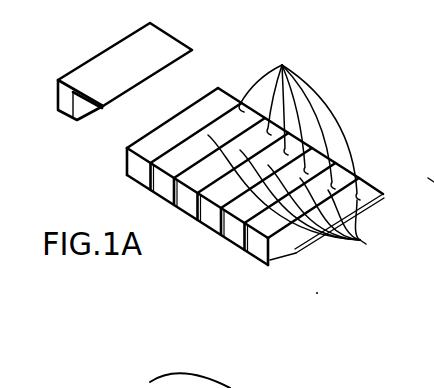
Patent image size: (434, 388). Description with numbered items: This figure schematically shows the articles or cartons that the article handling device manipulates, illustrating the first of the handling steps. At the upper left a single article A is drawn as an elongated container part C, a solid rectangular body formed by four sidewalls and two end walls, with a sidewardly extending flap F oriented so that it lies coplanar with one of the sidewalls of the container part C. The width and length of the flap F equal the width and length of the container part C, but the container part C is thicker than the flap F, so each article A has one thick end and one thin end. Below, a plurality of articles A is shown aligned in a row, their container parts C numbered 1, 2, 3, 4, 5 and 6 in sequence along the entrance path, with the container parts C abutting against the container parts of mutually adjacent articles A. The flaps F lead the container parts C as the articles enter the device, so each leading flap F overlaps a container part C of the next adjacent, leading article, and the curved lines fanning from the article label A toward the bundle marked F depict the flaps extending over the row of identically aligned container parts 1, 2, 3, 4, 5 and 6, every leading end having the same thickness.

The article A is at (113, 41).
The flap F is at (174, 49).
The container part C is at (66, 117).
The channel 1 is at (186, 147).
The channel 2 is at (209, 162).
The channel 3 is at (233, 177).
The channel 4 is at (256, 192).
The channel 5 is at (280, 207).
The channel 6 is at (258, 244).